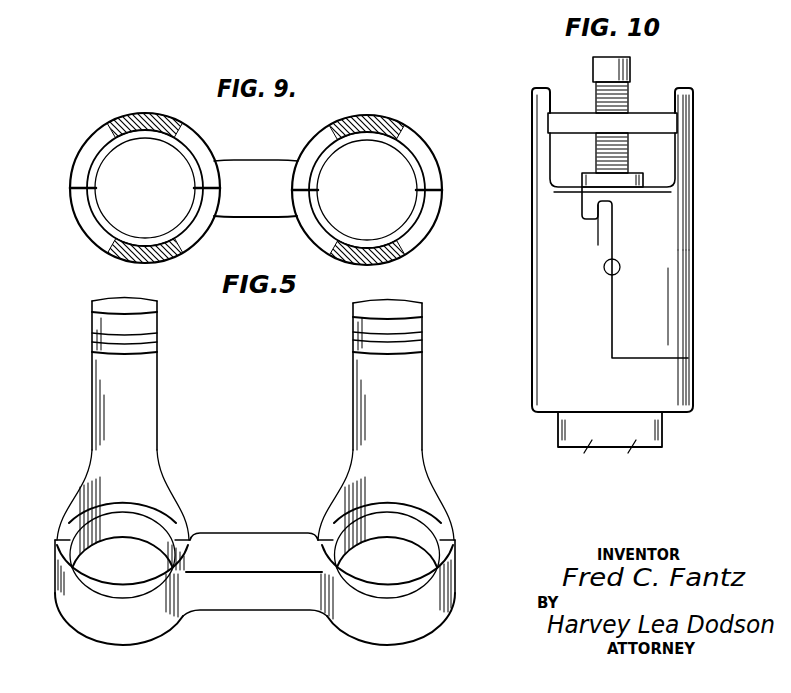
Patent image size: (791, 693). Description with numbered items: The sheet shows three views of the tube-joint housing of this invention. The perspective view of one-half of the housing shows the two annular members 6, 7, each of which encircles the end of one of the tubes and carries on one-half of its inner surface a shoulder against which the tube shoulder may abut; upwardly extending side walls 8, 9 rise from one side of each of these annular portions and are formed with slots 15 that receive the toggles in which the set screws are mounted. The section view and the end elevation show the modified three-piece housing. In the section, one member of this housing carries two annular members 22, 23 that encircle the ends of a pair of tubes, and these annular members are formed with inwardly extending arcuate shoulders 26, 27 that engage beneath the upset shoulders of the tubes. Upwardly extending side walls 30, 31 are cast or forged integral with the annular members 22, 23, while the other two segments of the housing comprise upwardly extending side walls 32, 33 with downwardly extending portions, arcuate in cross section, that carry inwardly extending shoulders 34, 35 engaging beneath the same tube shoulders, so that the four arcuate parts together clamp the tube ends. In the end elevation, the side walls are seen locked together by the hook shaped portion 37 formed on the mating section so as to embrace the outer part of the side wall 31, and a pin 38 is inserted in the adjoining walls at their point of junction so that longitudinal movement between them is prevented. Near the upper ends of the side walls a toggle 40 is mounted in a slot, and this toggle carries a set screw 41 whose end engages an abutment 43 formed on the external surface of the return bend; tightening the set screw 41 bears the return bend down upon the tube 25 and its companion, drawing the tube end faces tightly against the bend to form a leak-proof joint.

In FIG. 5, the annular member 6 is at (425, 628).
In FIG. 5, the annular member 7 is at (68, 611).
In FIG. 5, the upwardly extending side wall 8 is at (417, 378).
In FIG. 5, the upwardly extending side wall 9 is at (145, 386).
In FIG. 5, the slot 15 is at (157, 339).
In FIG. 9, the annular member 22 is at (82, 212).
In FIG. 9, the annular member 23 is at (437, 214).
In FIG. 10, the annular member 23 is at (682, 386).
In FIG. 10, the tube 25 is at (610, 432).
In FIG. 9, the arcuate shoulder 26 is at (141, 240).
In FIG. 9, the arcuate shoulder 27 is at (366, 238).
In FIG. 9, the upwardly extending side wall 30 is at (158, 258).
In FIG. 9, the upwardly extending side wall 31 is at (378, 256).
In FIG. 10, the upwardly extending side wall 31 is at (545, 247).
In FIG. 9, the upwardly extending side wall 32 is at (92, 150).
In FIG. 9, the upwardly extending side wall 33 is at (429, 153).
In FIG. 10, the upwardly extending side wall 33 is at (680, 232).
In FIG. 9, the inwardly extending shoulder 34 is at (176, 144).
In FIG. 9, the inwardly extending shoulder 35 is at (393, 144).
In FIG. 10, the hook shaped portion 37 is at (600, 220).
In FIG. 10, the pin 38 is at (606, 273).
In FIG. 10, the toggle 40 is at (638, 120).
In FIG. 10, the set screw 41 is at (630, 72).
In FIG. 10, the abutment 43 is at (633, 178).